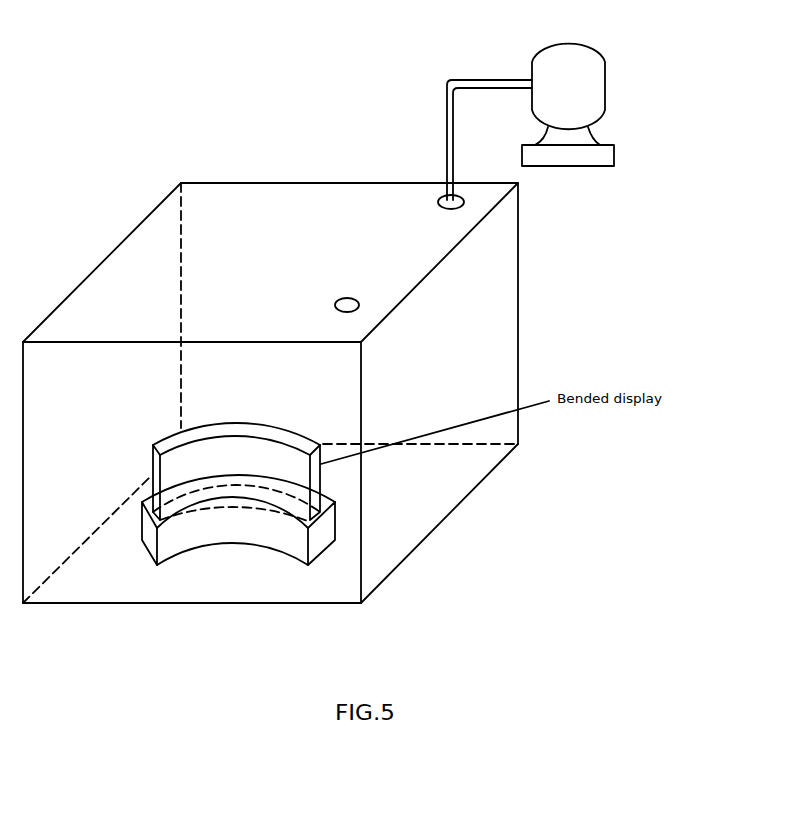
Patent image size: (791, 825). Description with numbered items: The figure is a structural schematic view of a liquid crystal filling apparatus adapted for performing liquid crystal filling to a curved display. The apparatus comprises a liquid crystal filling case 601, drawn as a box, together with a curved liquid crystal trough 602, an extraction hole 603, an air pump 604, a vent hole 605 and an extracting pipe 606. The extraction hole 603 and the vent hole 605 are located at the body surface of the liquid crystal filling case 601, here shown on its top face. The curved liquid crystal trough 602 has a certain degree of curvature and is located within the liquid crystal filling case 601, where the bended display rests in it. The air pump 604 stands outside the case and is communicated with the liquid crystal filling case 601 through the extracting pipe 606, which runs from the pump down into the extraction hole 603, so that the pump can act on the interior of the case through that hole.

The liquid crystal filling case 601 is at (518, 313).
The curved liquid crystal trough 602 is at (263, 535).
The extraction hole 603 is at (440, 198).
The air pump 604 is at (600, 90).
The vent hole 605 is at (339, 301).
The extracting pipe 606 is at (475, 81).